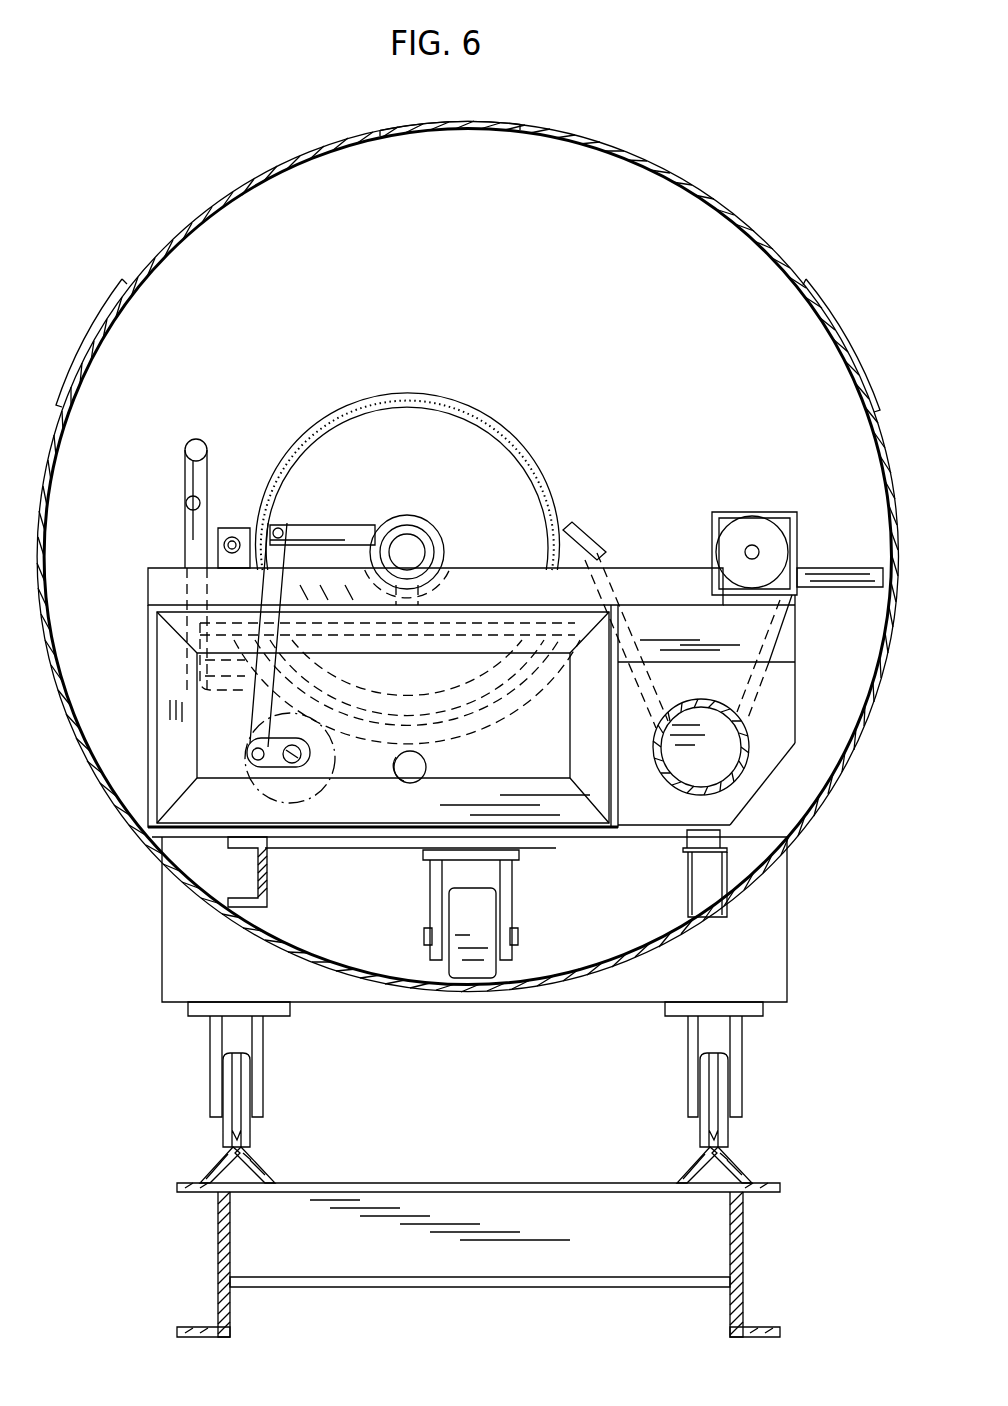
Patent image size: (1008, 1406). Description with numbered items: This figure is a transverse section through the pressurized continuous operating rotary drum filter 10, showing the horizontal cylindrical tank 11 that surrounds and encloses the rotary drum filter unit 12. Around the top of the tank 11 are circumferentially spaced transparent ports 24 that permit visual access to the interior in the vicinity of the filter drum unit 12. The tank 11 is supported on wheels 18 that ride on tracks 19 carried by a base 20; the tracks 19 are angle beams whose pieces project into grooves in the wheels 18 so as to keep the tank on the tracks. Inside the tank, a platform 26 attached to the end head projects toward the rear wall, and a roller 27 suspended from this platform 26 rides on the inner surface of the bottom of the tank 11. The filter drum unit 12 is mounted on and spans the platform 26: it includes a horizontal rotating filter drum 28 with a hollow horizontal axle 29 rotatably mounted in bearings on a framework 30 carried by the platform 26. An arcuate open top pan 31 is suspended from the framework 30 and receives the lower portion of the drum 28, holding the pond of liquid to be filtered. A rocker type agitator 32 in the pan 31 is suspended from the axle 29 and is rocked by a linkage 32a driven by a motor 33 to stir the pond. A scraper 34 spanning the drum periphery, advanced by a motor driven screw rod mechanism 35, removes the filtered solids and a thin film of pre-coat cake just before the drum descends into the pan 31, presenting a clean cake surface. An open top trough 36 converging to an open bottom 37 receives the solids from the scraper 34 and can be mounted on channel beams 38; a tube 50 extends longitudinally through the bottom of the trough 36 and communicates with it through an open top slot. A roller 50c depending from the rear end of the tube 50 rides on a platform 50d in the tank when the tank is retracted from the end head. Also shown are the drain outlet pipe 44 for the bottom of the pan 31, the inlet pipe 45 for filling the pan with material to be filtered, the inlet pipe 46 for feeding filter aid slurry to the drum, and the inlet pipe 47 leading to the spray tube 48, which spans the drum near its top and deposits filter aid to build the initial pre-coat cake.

The pressurized continuous operating rotary drum filter 10 is at (748, 212).
The pressure vessel or tank 11 is at (780, 258).
The rotary drum filter unit 12 is at (488, 418).
The wheels 18 is at (248, 1095).
The tracks 19 is at (262, 1170).
The base 20 is at (530, 1240).
The transparent ports 24 is at (422, 121).
The platform 26 is at (337, 850).
The roller 27 is at (490, 948).
The filter drum 28 is at (372, 410).
The axle 29 is at (420, 535).
The framework 30 is at (615, 605).
The arcuate open top pan 31 is at (508, 712).
The rocker type agitator 32 is at (476, 722).
The linkage 32a is at (328, 530).
The motor 33 is at (300, 790).
The scraper 34 is at (590, 540).
The motor driven screw rod mechanism 35 is at (770, 535).
The open top trough 36 is at (793, 638).
The open bottom 37 is at (741, 732).
The channel beams 38 is at (790, 712).
The drain outlet pipe 44 is at (408, 770).
The inlet pipe 45 is at (180, 462).
The inlet pipe 46 is at (183, 512).
The inlet pipe 47 is at (238, 540).
The spray tube 48 is at (243, 535).
The tube 50 is at (665, 780).
The roller 50c is at (718, 840).
The platform 50d is at (688, 880).